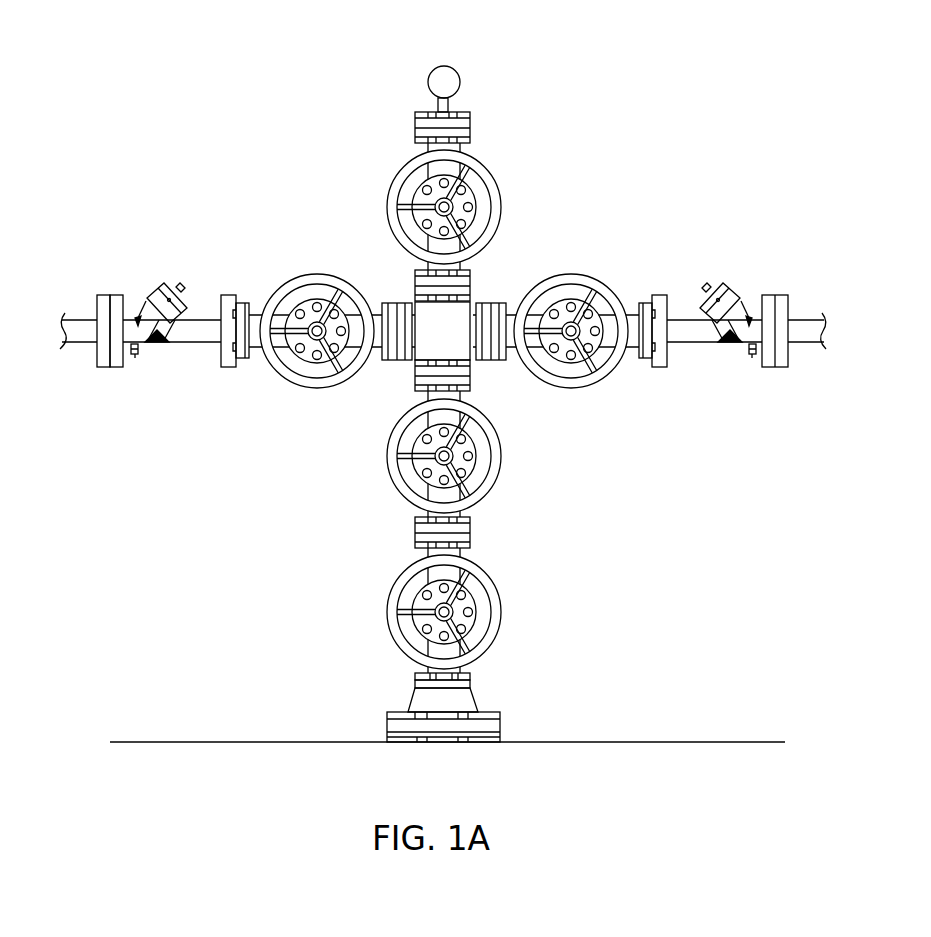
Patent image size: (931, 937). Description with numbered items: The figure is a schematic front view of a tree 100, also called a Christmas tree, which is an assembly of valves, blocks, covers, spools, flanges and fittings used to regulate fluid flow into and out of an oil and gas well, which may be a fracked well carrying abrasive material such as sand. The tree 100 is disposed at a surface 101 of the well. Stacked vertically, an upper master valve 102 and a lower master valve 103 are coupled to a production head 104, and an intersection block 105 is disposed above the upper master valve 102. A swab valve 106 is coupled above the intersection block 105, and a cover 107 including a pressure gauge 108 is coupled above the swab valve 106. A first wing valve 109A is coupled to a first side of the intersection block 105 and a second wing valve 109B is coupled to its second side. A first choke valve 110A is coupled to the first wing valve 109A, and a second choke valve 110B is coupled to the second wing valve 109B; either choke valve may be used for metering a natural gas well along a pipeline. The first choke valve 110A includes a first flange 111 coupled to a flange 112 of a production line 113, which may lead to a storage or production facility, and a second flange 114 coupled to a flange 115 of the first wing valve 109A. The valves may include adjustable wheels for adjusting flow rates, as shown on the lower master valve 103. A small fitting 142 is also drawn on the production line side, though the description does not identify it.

The tree 100 is at (182, 74).
The surface 101 is at (212, 742).
The upper master valve 102 is at (438, 470).
The lower master valve 103 is at (422, 603).
The production head 104 is at (425, 702).
The intersection block 105 is at (442, 330).
The swab valve 106 is at (427, 180).
The cover 107 is at (420, 105).
The pressure gauge 108 is at (443, 77).
The first wing valve 109A is at (303, 303).
The second wing valve 109B is at (578, 305).
The first choke valve 110A is at (153, 282).
The second choke valve 110B is at (737, 280).
The first flange 111 is at (117, 362).
The flange 112 is at (105, 303).
The production line 113 is at (73, 346).
The second flange 114 is at (227, 365).
The flange 115 is at (240, 360).
The sensor 142 is at (134, 356).